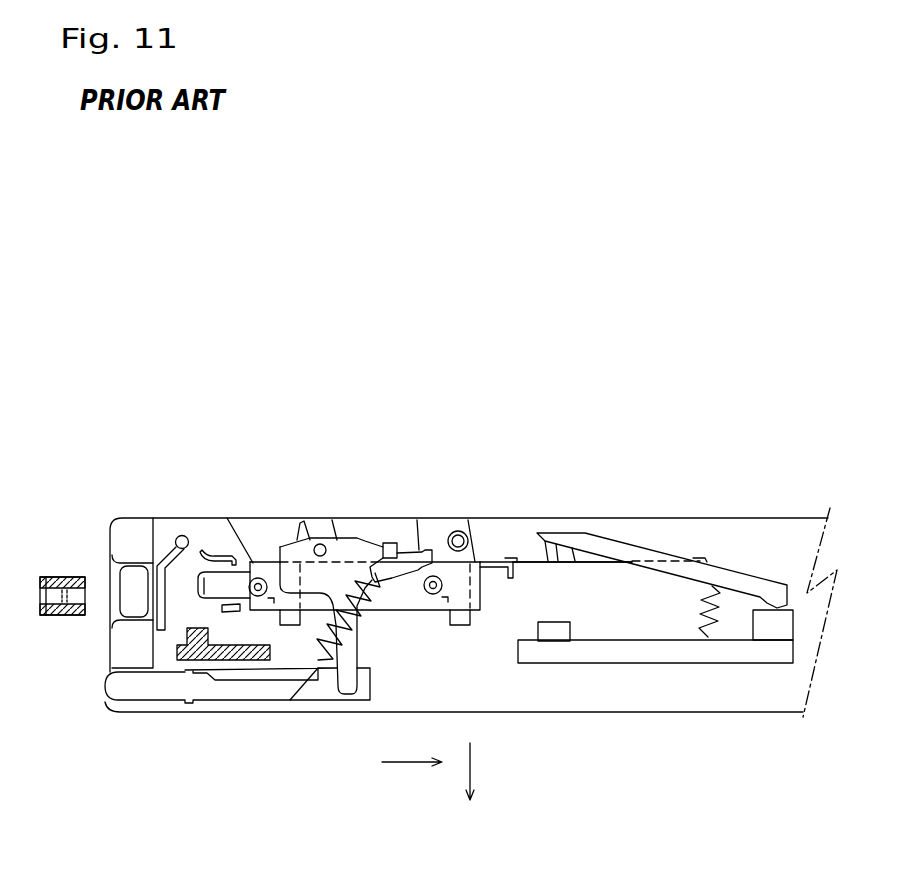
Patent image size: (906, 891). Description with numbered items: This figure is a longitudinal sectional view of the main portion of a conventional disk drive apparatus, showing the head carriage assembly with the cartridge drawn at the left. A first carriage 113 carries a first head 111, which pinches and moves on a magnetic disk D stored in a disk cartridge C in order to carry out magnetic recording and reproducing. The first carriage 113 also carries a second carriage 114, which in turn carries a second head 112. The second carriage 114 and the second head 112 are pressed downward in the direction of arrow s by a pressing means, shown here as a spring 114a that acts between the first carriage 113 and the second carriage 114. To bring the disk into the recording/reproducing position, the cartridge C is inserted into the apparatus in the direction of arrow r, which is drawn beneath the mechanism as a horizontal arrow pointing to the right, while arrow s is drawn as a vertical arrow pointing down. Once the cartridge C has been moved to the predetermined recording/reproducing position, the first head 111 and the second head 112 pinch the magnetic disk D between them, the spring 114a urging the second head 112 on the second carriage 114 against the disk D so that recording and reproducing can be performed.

The first head 111 is at (570, 623).
The second head 112 is at (547, 557).
The first carriage 113 is at (655, 663).
The second carriage 114 is at (613, 543).
The spring 114a is at (712, 597).
The disk cartridge C is at (68, 577).
The magnetic disk D is at (38, 590).
The arrow r is at (404, 762).
The arrow S s is at (470, 768).